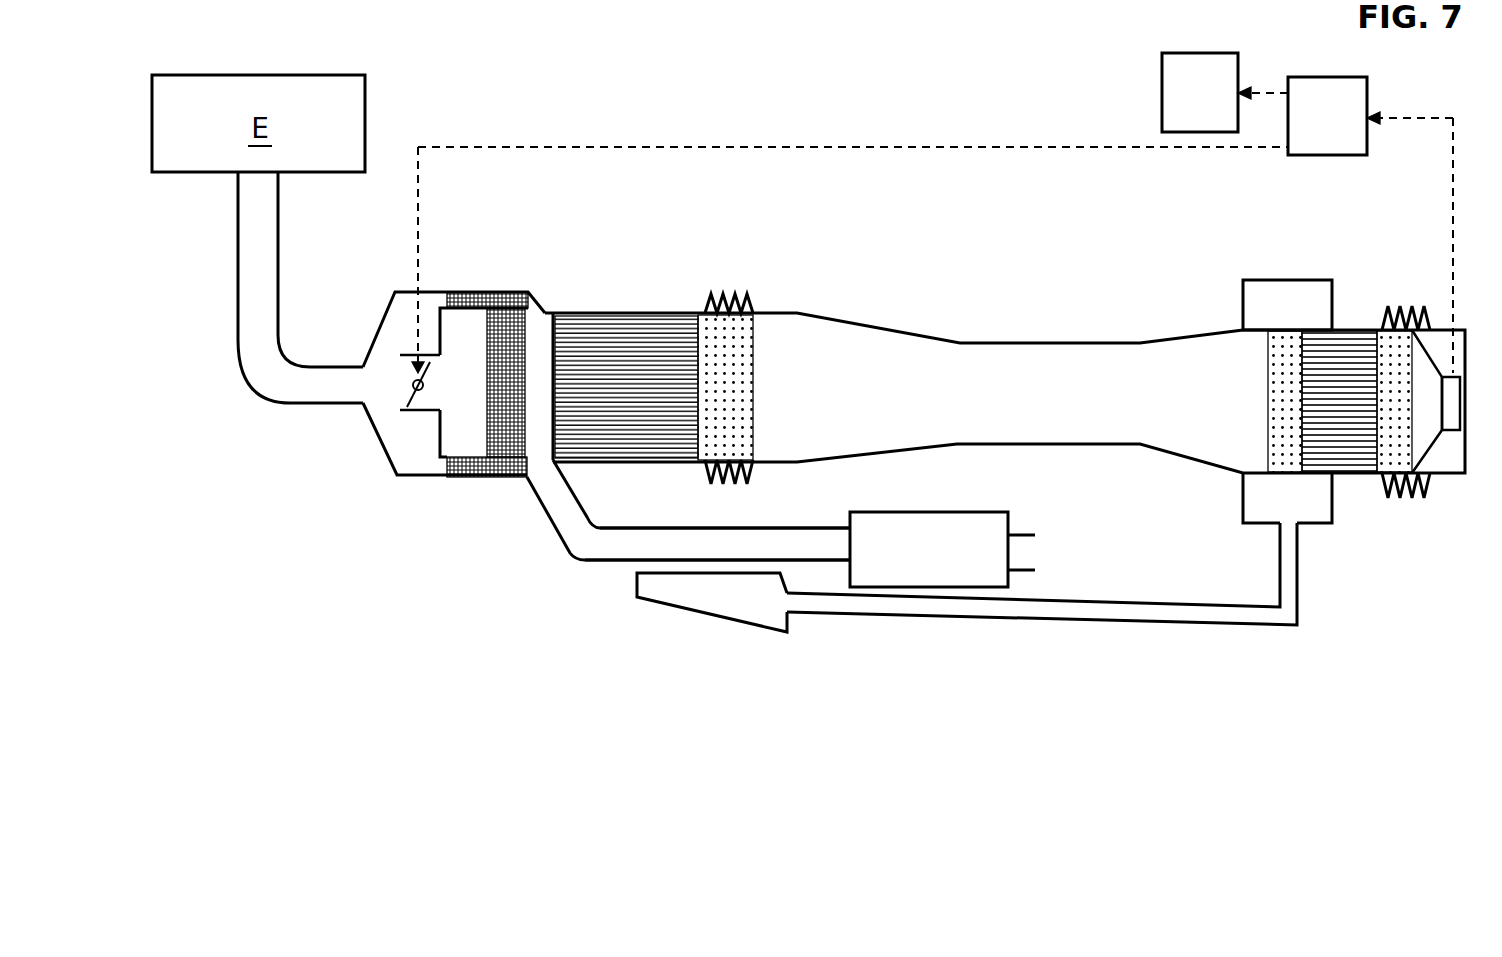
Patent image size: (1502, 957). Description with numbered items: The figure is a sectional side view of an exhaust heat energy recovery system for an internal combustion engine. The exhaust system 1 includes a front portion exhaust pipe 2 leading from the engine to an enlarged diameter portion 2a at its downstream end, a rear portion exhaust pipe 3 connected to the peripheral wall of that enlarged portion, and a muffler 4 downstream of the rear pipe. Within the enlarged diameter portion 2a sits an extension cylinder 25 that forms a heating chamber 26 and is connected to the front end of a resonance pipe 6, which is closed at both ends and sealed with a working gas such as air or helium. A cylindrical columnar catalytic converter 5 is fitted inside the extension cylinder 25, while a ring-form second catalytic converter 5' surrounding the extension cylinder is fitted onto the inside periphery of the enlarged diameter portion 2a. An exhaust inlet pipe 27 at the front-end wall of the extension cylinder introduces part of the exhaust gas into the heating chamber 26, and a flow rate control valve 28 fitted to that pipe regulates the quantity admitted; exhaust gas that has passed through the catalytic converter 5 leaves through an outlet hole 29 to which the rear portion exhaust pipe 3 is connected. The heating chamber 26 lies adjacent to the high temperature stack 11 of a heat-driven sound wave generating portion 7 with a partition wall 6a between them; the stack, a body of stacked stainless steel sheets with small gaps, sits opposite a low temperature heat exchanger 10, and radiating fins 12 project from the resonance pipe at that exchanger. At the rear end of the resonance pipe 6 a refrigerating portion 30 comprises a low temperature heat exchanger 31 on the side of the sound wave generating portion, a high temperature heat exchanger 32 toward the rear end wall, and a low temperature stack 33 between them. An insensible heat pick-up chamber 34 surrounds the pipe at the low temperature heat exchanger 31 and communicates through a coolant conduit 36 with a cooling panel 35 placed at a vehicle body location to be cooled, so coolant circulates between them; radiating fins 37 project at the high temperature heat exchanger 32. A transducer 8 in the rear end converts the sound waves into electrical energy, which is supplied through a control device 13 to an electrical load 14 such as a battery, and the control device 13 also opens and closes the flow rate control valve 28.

The exhaust system 1 is at (1005, 330).
The front portion exhaust pipe 2 is at (253, 290).
The enlarged diameter portion 2a is at (428, 477).
The rear portion exhaust pipe 3 is at (731, 555).
The muffler 4 is at (921, 565).
The catalytic converter 5 is at (487, 494).
The second catalytic converter 5' is at (487, 354).
The resonance pipe 6 is at (998, 342).
The partition wall 6a is at (572, 398).
The sound wave generating portion 7 is at (655, 306).
The transducer 8 is at (1452, 432).
The low temperature heat exchanger 10 is at (725, 335).
The high temperature stack 11 is at (622, 337).
The radiating fins 12 is at (750, 483).
The control device 13 is at (1316, 133).
The electrical load 14 is at (1188, 108).
The extension cylinder 25 is at (513, 300).
The heating chamber 26 is at (532, 330).
The exhaust inlet pipe 27 is at (423, 412).
The flow rate control valve 28 is at (412, 390).
The outlet hole 29 is at (537, 460).
The refrigerating portion 30 is at (1337, 318).
The low temperature heat exchanger 31 is at (1281, 350).
The high temperature heat exchanger 32 is at (1394, 346).
The low temperature stack 33 is at (1360, 355).
The insensible heat pick-up chamber 34 is at (1255, 492).
The cooling panel 35 is at (720, 598).
The coolant conduit 36 is at (1093, 617).
The radiating fins 37 is at (1383, 495).